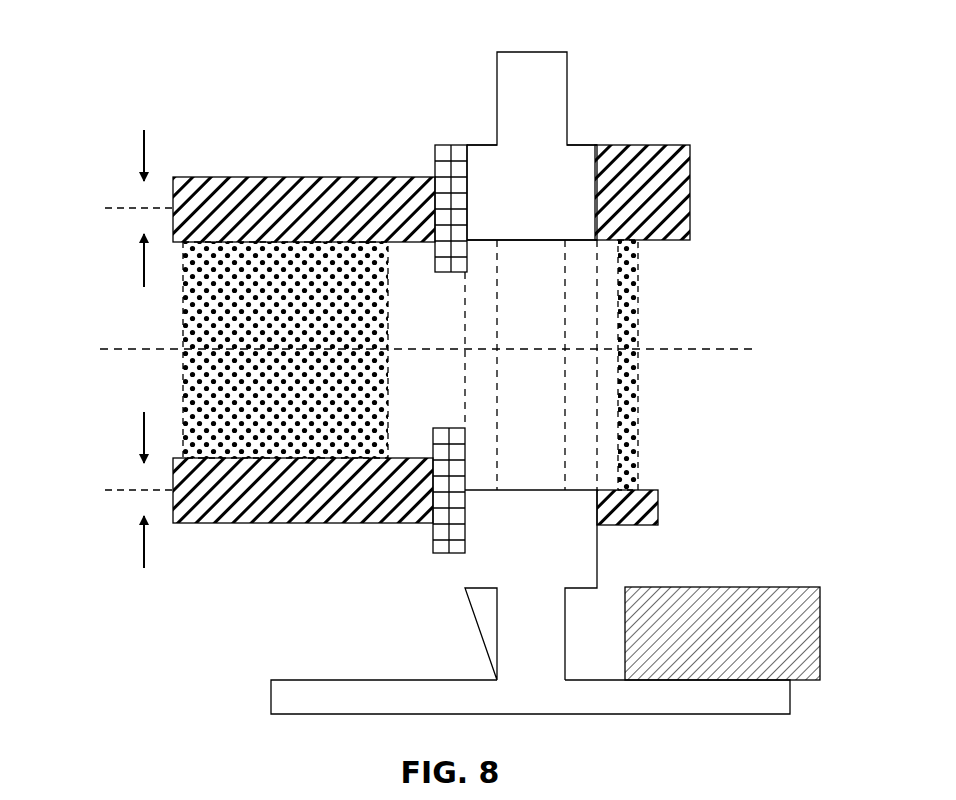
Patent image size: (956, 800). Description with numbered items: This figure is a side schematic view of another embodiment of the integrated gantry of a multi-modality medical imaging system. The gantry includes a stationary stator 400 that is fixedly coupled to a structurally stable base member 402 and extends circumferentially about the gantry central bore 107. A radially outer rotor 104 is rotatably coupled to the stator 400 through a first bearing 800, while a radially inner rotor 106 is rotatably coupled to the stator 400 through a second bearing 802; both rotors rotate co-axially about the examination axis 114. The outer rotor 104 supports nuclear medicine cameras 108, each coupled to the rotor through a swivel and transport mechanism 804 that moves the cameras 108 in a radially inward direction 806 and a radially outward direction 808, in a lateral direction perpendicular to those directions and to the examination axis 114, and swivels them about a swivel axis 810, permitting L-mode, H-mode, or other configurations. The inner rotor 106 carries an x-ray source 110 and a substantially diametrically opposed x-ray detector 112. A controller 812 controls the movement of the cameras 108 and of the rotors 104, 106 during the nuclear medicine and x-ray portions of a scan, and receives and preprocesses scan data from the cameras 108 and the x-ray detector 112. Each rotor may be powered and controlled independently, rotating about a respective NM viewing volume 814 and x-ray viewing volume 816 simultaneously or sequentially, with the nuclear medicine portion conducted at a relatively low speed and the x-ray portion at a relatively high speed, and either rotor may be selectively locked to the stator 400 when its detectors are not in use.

The stationary stator 400 is at (529, 52).
The first bearing 800 is at (480, 241).
The radially outer rotor 104 is at (482, 145).
The radially inner rotor 106 is at (580, 145).
The nuclear medicine cameras 108 is at (305, 177).
The swivel and transport mechanism 804 is at (449, 272).
The x-ray source 110 is at (690, 190).
The x-ray viewing volume 816 is at (631, 249).
The gantry central bore 107 is at (650, 318).
The examination axis 114 is at (752, 349).
The NM viewing volume 814 is at (185, 318).
The second bearing 802 is at (580, 490).
The x-ray detector 112 is at (660, 500).
The controller 812 is at (756, 587).
The base member 402 is at (340, 680).
The radially inward direction 806 is at (144, 147).
The radially outward direction 808 is at (144, 265).
The swivel axis 810 is at (115, 208).